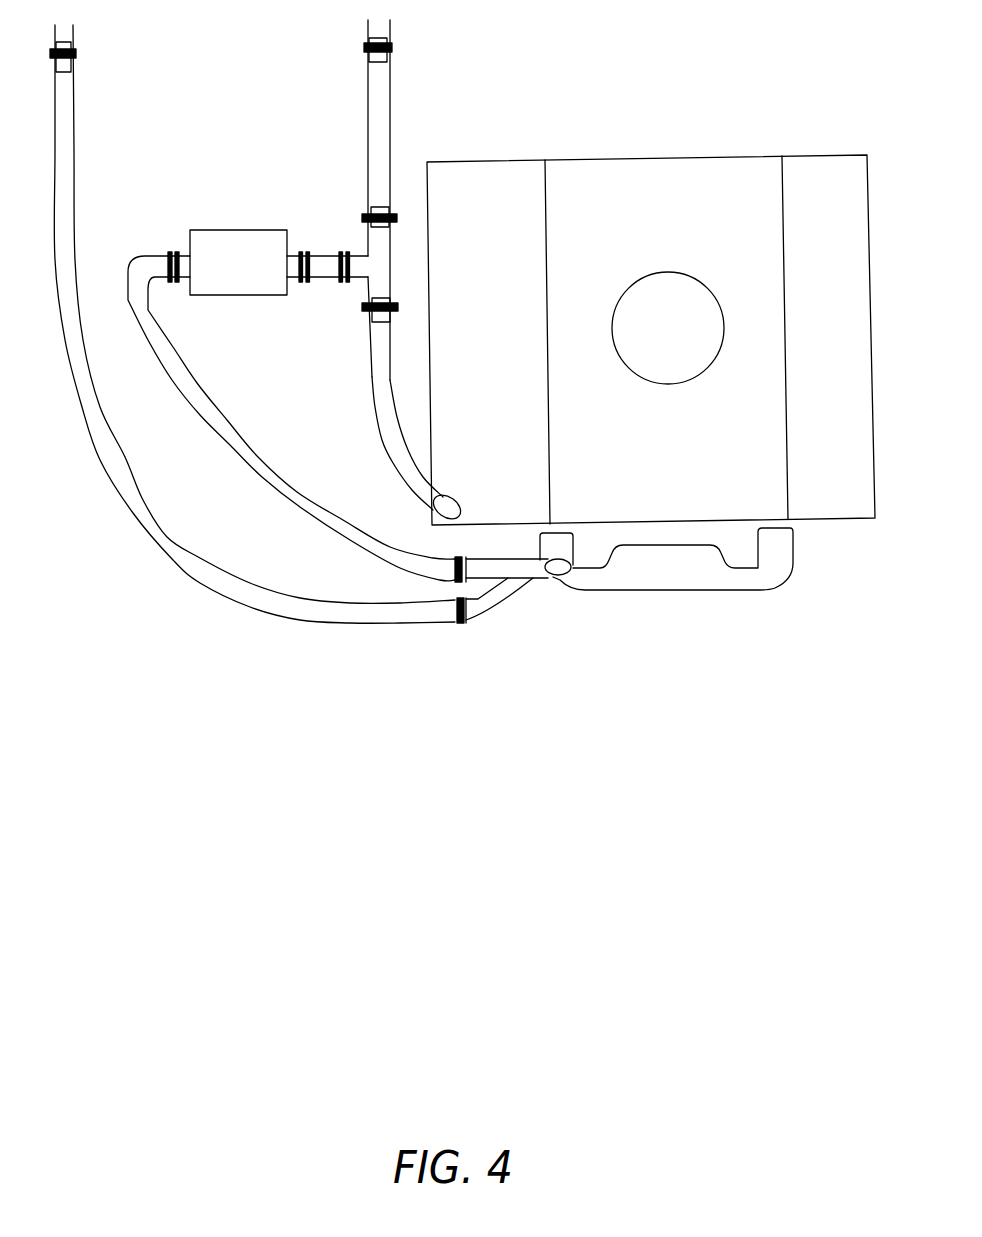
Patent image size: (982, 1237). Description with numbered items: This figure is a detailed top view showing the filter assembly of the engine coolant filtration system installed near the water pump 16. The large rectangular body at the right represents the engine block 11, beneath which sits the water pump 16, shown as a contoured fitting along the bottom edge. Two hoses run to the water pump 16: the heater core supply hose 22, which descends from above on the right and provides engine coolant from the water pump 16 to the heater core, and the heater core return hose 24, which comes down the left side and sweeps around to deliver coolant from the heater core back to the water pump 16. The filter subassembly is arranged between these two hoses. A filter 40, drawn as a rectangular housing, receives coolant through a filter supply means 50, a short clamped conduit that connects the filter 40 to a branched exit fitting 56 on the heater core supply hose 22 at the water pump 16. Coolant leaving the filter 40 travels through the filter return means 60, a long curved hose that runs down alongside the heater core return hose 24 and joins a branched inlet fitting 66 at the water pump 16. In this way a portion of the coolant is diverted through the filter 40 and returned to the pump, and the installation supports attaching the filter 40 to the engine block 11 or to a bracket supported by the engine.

The engine block 11 is at (833, 243).
The water pump 16 is at (753, 578).
The heater core supply hose 22 is at (383, 155).
The heater core return hose 24 is at (58, 108).
The filter 40 is at (200, 240).
The filter supply means 50 is at (325, 268).
The branched exit fitting 56 is at (357, 255).
The filter return means 60 is at (213, 410).
The branched inlet fitting 66 is at (490, 600).